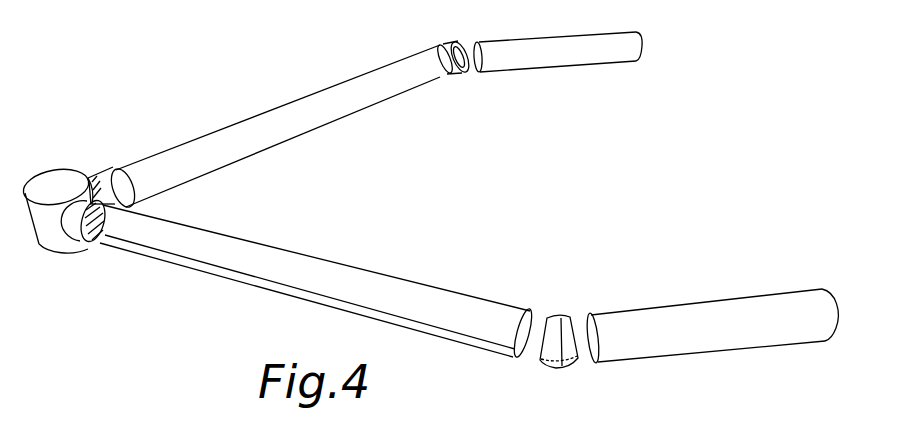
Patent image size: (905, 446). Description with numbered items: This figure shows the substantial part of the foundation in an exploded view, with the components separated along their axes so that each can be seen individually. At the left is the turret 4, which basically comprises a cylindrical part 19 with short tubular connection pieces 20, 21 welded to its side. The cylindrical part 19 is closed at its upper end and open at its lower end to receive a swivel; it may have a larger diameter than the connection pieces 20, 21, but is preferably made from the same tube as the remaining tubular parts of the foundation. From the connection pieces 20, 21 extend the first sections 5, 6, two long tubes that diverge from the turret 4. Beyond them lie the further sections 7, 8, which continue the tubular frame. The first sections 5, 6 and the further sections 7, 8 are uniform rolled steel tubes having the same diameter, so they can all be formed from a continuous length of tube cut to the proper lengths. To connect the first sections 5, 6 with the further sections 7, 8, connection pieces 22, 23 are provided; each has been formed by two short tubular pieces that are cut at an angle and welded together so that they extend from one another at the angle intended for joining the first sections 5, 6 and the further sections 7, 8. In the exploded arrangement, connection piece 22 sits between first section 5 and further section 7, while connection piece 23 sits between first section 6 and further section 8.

The turret 4 is at (62, 178).
The first section 5 is at (318, 118).
The first section 6 is at (363, 277).
The further section 7 is at (573, 62).
The further section 8 is at (647, 313).
The cylindrical part 19 is at (47, 245).
The connection piece 20 is at (86, 243).
The connection piece 21 is at (101, 180).
The connection piece 22 is at (467, 76).
The connection piece 23 is at (565, 318).